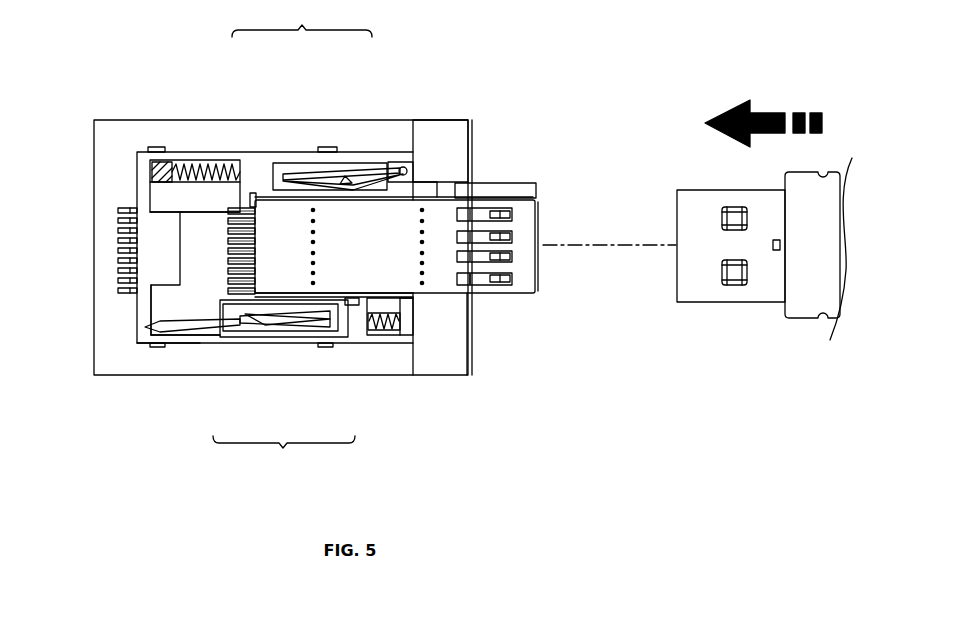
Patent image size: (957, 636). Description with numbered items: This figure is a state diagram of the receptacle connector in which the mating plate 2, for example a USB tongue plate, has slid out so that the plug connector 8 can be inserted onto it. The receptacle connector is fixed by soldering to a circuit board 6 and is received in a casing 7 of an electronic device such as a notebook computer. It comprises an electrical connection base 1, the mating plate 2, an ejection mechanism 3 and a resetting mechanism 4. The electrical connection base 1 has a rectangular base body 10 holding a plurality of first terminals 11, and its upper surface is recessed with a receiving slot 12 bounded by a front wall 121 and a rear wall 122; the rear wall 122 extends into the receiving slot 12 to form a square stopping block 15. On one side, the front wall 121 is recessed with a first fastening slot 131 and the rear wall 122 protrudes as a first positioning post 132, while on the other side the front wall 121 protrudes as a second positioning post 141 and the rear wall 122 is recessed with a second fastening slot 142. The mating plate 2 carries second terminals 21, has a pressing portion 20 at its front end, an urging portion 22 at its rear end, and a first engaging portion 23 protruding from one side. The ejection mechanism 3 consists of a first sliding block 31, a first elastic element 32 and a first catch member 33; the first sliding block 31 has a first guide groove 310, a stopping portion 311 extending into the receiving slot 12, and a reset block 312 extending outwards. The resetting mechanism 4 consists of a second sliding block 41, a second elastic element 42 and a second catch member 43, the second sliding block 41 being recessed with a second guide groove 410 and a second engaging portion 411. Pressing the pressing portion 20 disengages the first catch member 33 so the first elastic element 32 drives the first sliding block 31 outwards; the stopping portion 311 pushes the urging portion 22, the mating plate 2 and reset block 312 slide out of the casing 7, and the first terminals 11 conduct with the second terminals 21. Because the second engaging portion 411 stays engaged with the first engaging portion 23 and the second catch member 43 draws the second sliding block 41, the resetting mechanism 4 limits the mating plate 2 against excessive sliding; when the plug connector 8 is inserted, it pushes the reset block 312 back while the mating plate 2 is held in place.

The electrical connection base 1 is at (143, 343).
The mating plate 2 is at (540, 215).
The ejection mechanism 3 is at (302, 22).
The resetting mechanism 4 is at (284, 455).
The circuit board 6 is at (118, 123).
The casing 7 is at (475, 127).
The plug connector 8 is at (807, 318).
The base body 10 is at (162, 150).
The first terminals 11 is at (236, 287).
The receiving slot 12 is at (230, 253).
The stopping block 15 is at (157, 273).
The pressing portion 20 is at (537, 278).
The second terminals 21 is at (488, 282).
The urging portion 22 is at (228, 238).
The first engaging portion 23 is at (340, 347).
The first sliding block 31 is at (268, 167).
The first elastic element 32 is at (222, 160).
The first catch member 33 is at (387, 165).
The second sliding block 41 is at (303, 333).
The second elastic element 42 is at (372, 316).
The second catch member 43 is at (222, 335).
The front wall 121 is at (405, 328).
The rear wall 122 is at (149, 307).
The first fastening slot 131 is at (405, 160).
The first positioning post 132 is at (152, 170).
The second positioning post 141 is at (388, 330).
The second fastening slot 142 is at (146, 327).
The first guide groove 310 is at (288, 177).
The stopping portion 311 is at (178, 190).
The reset block 312 is at (487, 188).
The second guide groove 410 is at (264, 325).
The second engaging portion 411 is at (356, 300).